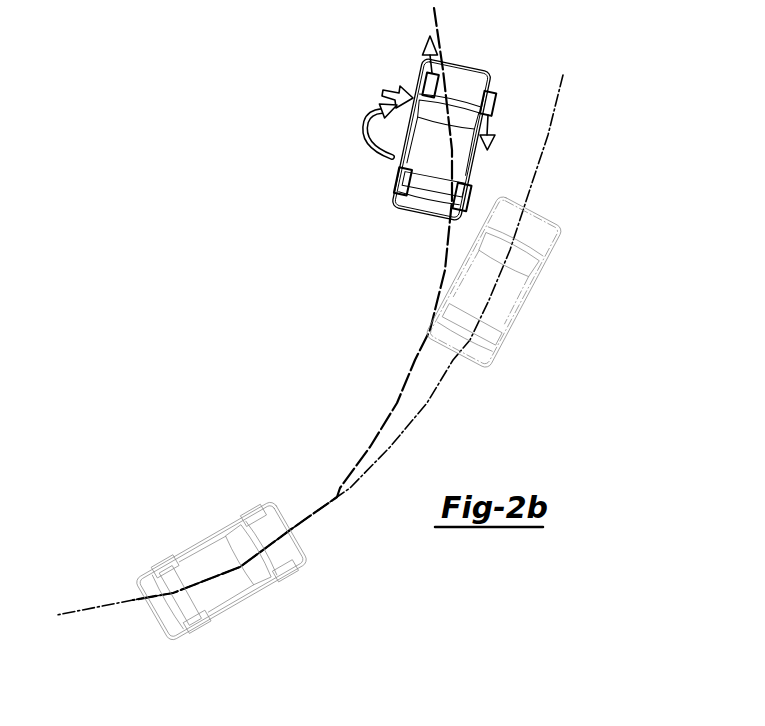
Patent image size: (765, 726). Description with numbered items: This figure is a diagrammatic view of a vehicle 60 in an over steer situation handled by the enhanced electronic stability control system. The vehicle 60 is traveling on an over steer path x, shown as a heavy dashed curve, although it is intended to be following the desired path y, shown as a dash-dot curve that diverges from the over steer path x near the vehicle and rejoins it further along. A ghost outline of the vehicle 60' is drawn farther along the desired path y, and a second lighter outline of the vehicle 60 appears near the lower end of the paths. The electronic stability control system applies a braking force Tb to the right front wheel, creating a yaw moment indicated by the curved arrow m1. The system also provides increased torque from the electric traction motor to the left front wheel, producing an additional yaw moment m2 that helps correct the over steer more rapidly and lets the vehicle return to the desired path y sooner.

The vehicle 60 is at (316, 329).
The vehicle at later position (ghost) 60' is at (523, 281).
The yaw moment arrow m1 is at (366, 128).
The additional yaw moment m2 is at (384, 92).
The braking force Tb is at (492, 133).
The over steer path x is at (442, 272).
The desired path y is at (547, 142).